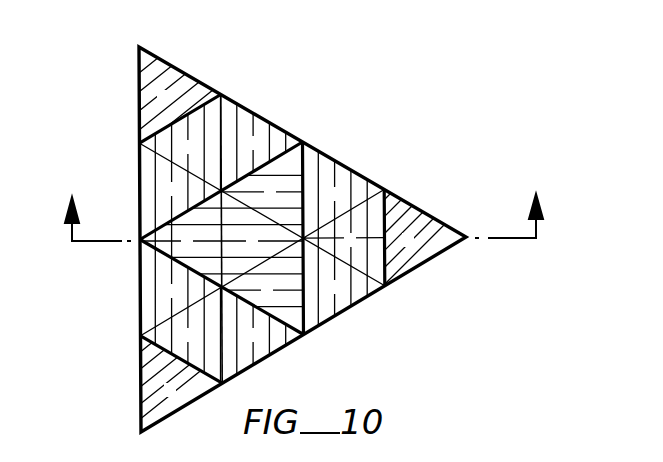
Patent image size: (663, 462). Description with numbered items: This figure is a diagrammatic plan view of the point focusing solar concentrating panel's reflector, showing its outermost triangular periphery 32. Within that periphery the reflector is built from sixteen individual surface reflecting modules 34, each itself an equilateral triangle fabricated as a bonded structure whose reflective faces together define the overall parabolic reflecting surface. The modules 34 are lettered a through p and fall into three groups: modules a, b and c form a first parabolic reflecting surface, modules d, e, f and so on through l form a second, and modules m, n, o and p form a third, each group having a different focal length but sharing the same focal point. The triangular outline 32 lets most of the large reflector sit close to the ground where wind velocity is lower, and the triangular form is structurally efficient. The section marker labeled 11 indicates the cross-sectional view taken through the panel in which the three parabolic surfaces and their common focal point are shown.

The outermost triangular periphery 32 is at (338, 320).
The individual surface reflecting modules 34 is at (320, 162).
The section line 11- 11 is at (544, 174).